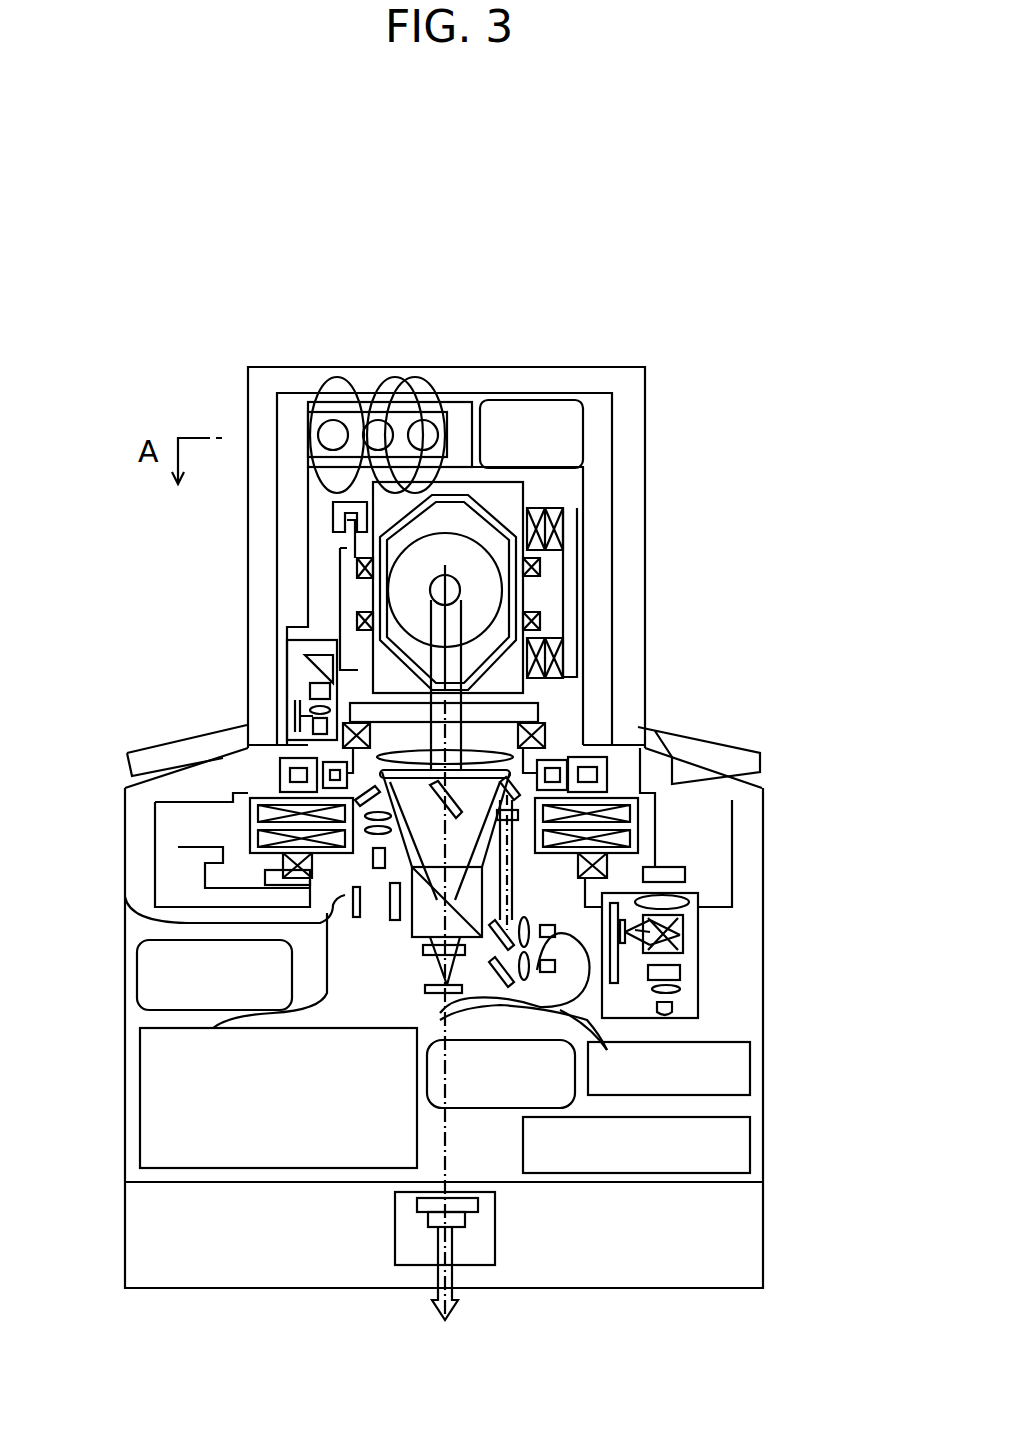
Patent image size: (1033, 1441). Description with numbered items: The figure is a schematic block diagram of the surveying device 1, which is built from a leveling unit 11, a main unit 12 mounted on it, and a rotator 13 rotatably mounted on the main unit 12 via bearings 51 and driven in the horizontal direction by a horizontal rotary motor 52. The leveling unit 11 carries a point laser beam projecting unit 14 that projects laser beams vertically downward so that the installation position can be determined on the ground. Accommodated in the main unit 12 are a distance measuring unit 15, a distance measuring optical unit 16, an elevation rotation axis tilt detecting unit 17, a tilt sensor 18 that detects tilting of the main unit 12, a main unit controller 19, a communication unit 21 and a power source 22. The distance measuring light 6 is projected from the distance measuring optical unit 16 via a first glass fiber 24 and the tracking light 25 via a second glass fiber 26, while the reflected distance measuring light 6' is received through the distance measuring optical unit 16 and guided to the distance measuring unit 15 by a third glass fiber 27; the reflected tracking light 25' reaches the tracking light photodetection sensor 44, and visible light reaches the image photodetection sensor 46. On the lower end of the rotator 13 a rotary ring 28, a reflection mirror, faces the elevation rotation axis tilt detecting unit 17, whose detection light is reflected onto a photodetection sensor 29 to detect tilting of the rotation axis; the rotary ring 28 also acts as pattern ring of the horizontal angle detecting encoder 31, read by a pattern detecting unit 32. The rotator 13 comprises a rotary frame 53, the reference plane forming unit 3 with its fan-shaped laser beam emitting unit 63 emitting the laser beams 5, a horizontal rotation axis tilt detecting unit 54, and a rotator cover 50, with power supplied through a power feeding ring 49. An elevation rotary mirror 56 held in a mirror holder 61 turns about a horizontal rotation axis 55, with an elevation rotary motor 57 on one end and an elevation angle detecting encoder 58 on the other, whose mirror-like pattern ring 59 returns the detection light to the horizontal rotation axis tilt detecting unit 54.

The surveying device 1 is at (790, 836).
The reference plane forming unit 3 is at (296, 408).
The laser beams for forming reference plane 5 is at (401, 366).
The distance measuring light 6 is at (467, 816).
The reflected distance measuring light 6' is at (254, 750).
The leveling unit 11 is at (766, 1240).
The main unit 12 is at (768, 984).
The rotator 13 is at (651, 611).
The point laser beam projecting unit 14 is at (395, 1235).
The distance measuring unit 15 is at (140, 1100).
The distance measuring optical unit 16 is at (404, 948).
The elevation rotation axis tilt detecting unit 17 is at (716, 938).
The tilt sensor 18 is at (137, 975).
The main unit controller 19 is at (500, 1113).
The communication unit 21 is at (750, 1063).
The power source 22 is at (750, 1128).
The first glass fiber 24 is at (385, 997).
The tracking light 25 is at (527, 929).
The reflected tracking light 25' is at (260, 955).
The second glass fiber 26 is at (597, 1052).
The third glass fiber 27 is at (330, 1010).
The rotary ring 28 is at (700, 868).
The photodetection sensor 29 is at (620, 947).
The horizontal angle detecting encoder 31 is at (270, 807).
The pattern detecting unit 32 is at (215, 872).
The tracking light photodetection sensor 44 is at (350, 905).
The image photodetection sensor 46 is at (480, 1000).
The power feeding ring 49 is at (610, 762).
The rotator cover 50 is at (540, 367).
The bearings 51 is at (546, 720).
The horizontal rotary motor 52 is at (194, 828).
The rotary frame 53 is at (585, 605).
The horizontal rotation axis tilt detecting unit 54 is at (280, 655).
The horizontal rotation axis 55 is at (540, 588).
The elevation rotary mirror 56 is at (548, 506).
The elevation rotary motor 57 is at (550, 688).
The elevation angle detecting encoder 58 is at (328, 495).
The pattern ring 59 is at (248, 535).
The mirror holder 61 is at (483, 555).
The fan-shaped laser beam emitting unit 63 is at (463, 393).